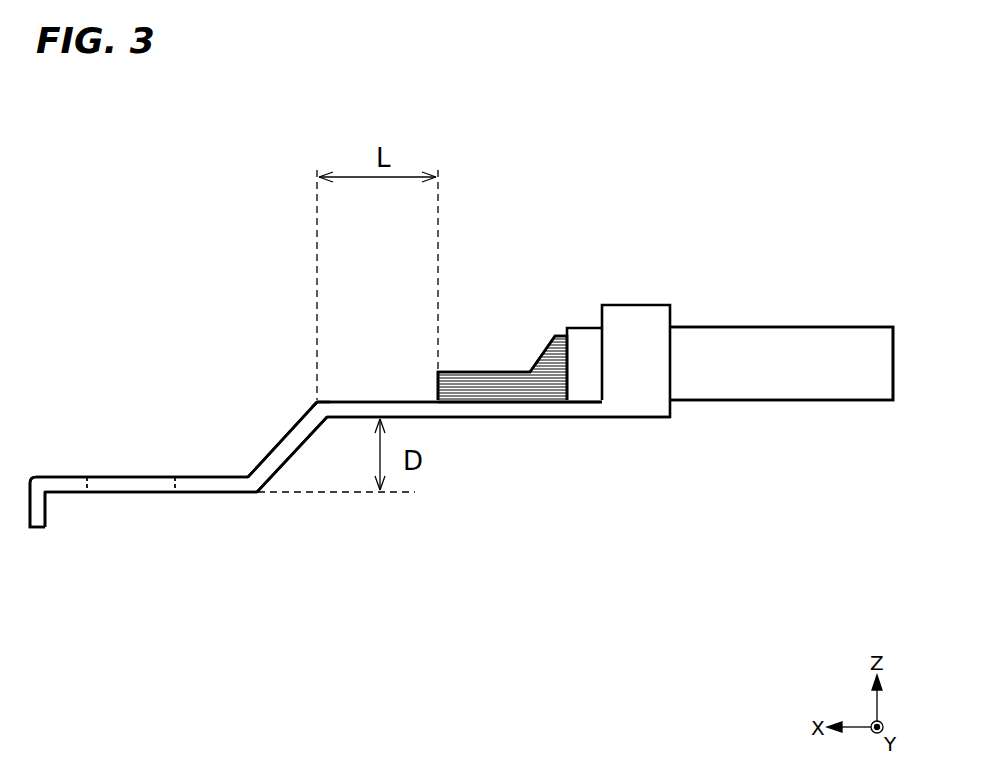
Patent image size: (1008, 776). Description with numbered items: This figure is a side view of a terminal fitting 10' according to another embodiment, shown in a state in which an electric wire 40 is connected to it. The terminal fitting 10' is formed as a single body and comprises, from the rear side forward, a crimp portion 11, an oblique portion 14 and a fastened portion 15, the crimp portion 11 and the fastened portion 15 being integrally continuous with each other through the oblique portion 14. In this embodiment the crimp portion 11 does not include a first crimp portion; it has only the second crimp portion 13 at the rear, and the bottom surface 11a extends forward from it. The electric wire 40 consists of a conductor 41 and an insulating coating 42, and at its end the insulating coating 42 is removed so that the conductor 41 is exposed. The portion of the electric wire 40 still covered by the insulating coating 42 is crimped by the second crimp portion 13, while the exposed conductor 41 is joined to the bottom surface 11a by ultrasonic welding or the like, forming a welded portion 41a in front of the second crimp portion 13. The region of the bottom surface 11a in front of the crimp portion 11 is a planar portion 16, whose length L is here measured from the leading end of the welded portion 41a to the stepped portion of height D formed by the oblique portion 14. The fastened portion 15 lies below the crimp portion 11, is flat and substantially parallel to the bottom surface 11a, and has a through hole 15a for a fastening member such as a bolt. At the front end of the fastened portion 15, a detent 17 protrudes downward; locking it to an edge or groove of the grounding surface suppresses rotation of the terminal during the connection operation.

The terminal fitting 10' is at (316, 336).
The crimp portion 11 is at (645, 515).
The bottom surface 11a is at (540, 410).
The second crimp portion 13 is at (631, 397).
The oblique portion 14 is at (268, 467).
The fastened portion 15 is at (65, 485).
The through hole 15a is at (135, 485).
The planar portion 16 is at (322, 410).
The detent 17 is at (45, 513).
The electric wire 40 is at (787, 325).
The conductor 41 is at (563, 333).
The welded portion 41a is at (472, 382).
The insulating coating 42 is at (858, 345).